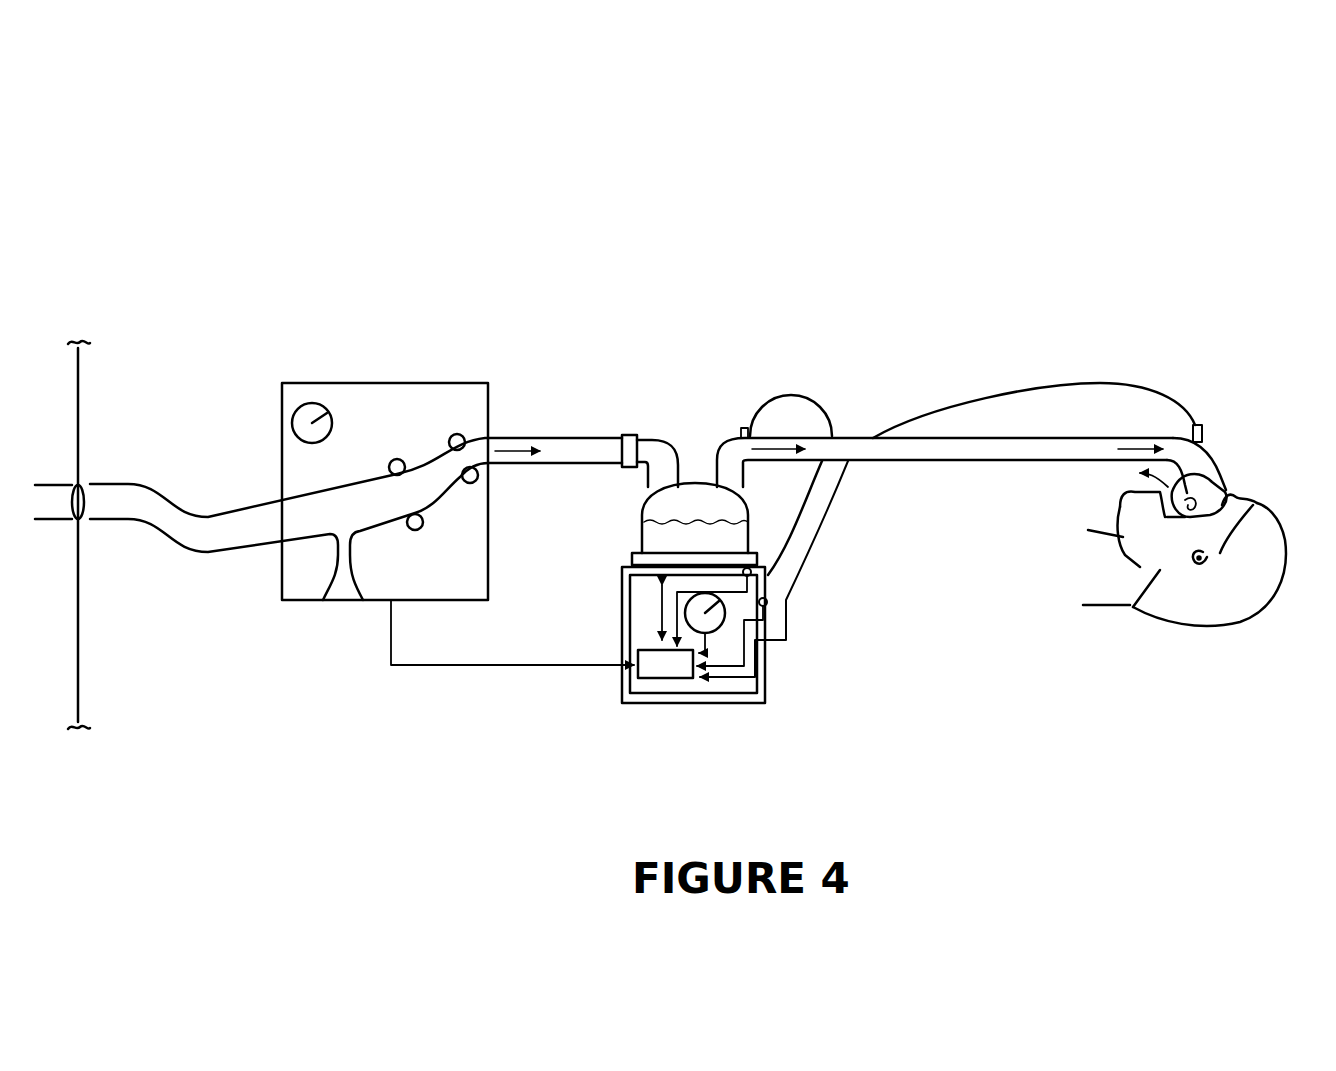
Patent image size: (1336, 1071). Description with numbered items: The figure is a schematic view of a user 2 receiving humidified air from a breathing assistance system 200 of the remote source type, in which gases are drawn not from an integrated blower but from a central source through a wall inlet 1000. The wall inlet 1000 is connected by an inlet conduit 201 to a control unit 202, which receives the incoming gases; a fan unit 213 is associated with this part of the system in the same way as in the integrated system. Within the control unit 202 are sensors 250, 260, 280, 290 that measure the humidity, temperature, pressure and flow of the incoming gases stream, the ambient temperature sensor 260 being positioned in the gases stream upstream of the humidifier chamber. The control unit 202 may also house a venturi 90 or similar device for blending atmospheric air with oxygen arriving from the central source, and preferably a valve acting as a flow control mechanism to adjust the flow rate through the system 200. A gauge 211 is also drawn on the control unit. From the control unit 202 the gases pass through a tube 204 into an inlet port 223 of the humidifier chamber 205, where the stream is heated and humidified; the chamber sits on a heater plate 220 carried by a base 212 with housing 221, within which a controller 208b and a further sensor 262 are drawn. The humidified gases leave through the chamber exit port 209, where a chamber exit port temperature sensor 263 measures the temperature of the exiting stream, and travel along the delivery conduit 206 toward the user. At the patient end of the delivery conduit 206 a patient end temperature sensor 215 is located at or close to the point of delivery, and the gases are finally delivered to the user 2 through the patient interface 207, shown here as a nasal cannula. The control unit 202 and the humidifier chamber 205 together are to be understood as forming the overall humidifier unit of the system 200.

The breathing assistance system 200 is at (715, 238).
The wall inlet 1000 is at (83, 490).
The inlet conduit 201 is at (173, 477).
The venturi 90 is at (328, 602).
The control unit 202 is at (357, 383).
The pressure gauge 211 is at (303, 402).
The sensor 280 is at (398, 459).
The fan unit 213 is at (433, 380).
The sensor 250 is at (459, 434).
The ambient temperature sensor 260 is at (479, 477).
The supply tube 204 is at (577, 440).
The inlet port 223 is at (648, 482).
The humidifier chamber 205 is at (640, 505).
The chamber exit port 209 is at (715, 462).
The heater plate 220 is at (640, 541).
The humidifier base 212 is at (625, 567).
The housing 221 is at (622, 643).
The controller 208b is at (670, 679).
The sensor 262 is at (752, 572).
The sensor 290 is at (768, 602).
The chamber exit port temperature sensor 263 is at (742, 428).
The delivery conduit 206 is at (978, 462).
The patient end temperature sensor 215 is at (1199, 425).
The patient interface 207 is at (1225, 490).
The user 2 is at (1150, 612).